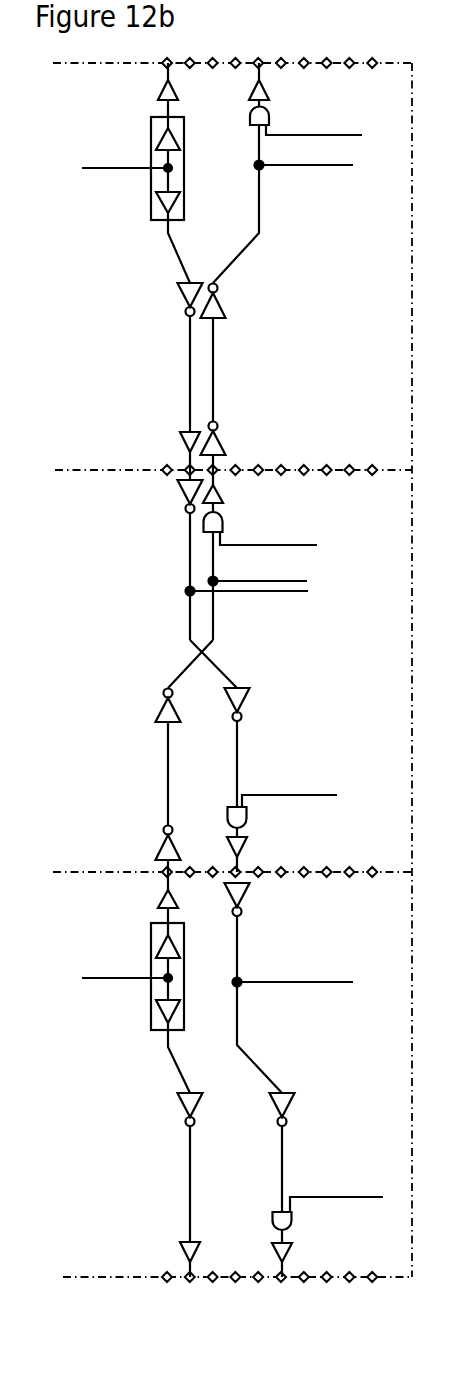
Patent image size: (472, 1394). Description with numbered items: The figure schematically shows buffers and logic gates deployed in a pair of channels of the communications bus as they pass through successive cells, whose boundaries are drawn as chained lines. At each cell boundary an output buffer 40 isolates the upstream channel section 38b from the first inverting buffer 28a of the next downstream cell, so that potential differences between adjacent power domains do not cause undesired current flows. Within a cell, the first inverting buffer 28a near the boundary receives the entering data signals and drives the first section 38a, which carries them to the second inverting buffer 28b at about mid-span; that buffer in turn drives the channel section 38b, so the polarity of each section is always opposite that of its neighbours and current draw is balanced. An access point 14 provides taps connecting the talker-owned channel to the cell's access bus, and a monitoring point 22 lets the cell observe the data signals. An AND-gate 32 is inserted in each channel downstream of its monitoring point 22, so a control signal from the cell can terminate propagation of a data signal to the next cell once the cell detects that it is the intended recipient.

The access point 14 is at (151, 140).
The monitoring point 22 is at (262, 168).
The first inverting buffer 28a is at (223, 445).
The second inverting buffer 28b is at (183, 297).
The AND-gate 32 is at (272, 113).
The first section 38a is at (213, 375).
The upstream channel section 38b is at (262, 232).
The output buffer 40 is at (160, 90).